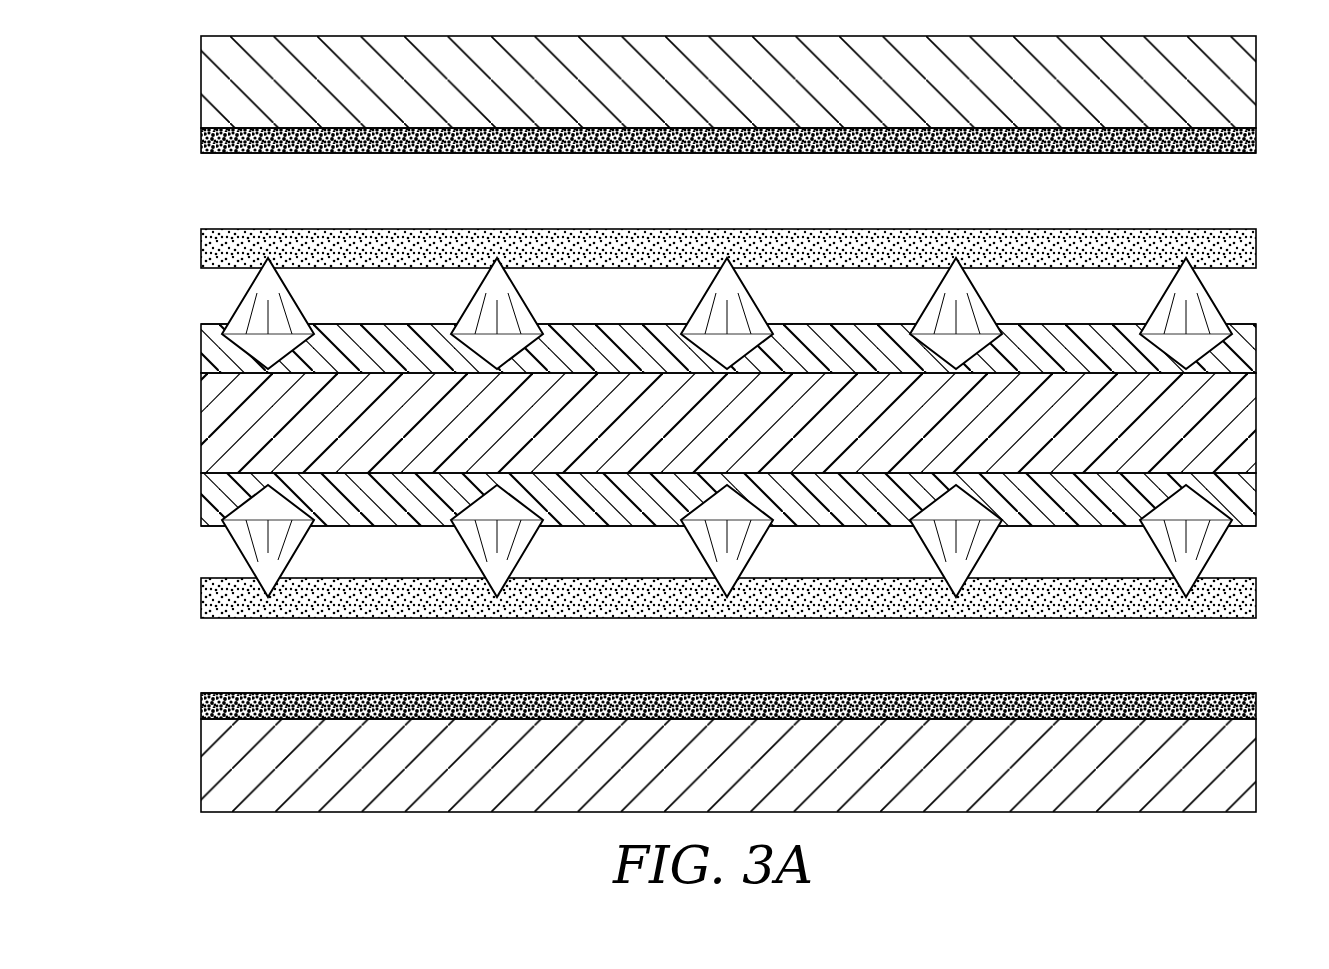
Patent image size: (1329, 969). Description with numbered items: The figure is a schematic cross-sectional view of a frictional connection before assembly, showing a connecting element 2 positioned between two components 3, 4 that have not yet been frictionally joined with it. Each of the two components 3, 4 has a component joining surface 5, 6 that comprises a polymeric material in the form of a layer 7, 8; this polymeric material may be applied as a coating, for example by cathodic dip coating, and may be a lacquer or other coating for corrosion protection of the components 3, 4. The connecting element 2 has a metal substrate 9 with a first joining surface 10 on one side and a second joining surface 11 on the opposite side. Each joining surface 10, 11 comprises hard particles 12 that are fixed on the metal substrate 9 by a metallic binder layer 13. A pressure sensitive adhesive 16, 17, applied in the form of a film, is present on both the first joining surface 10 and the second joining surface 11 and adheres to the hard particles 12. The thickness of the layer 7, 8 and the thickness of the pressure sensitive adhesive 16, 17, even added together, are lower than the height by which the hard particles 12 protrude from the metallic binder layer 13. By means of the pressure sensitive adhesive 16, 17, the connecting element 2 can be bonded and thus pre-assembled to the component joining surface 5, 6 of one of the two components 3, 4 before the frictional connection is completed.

The connecting element 2 is at (714, 422).
The component 3 is at (1237, 80).
The component 4 is at (1237, 793).
The component joining surface 5 is at (225, 153).
The component joining surface 6 is at (208, 693).
The layer 7 is at (1250, 143).
The layer 8 is at (1240, 706).
The metal substrate 9 is at (1248, 425).
The first joining surface 10 is at (223, 323).
The second joining surface 11 is at (208, 528).
The hard particles 12 is at (1192, 303).
The metallic binder layer 13 is at (1248, 343).
The pressure sensitive adhesive 16 is at (1248, 244).
The pressure sensitive adhesive 17 is at (1245, 600).